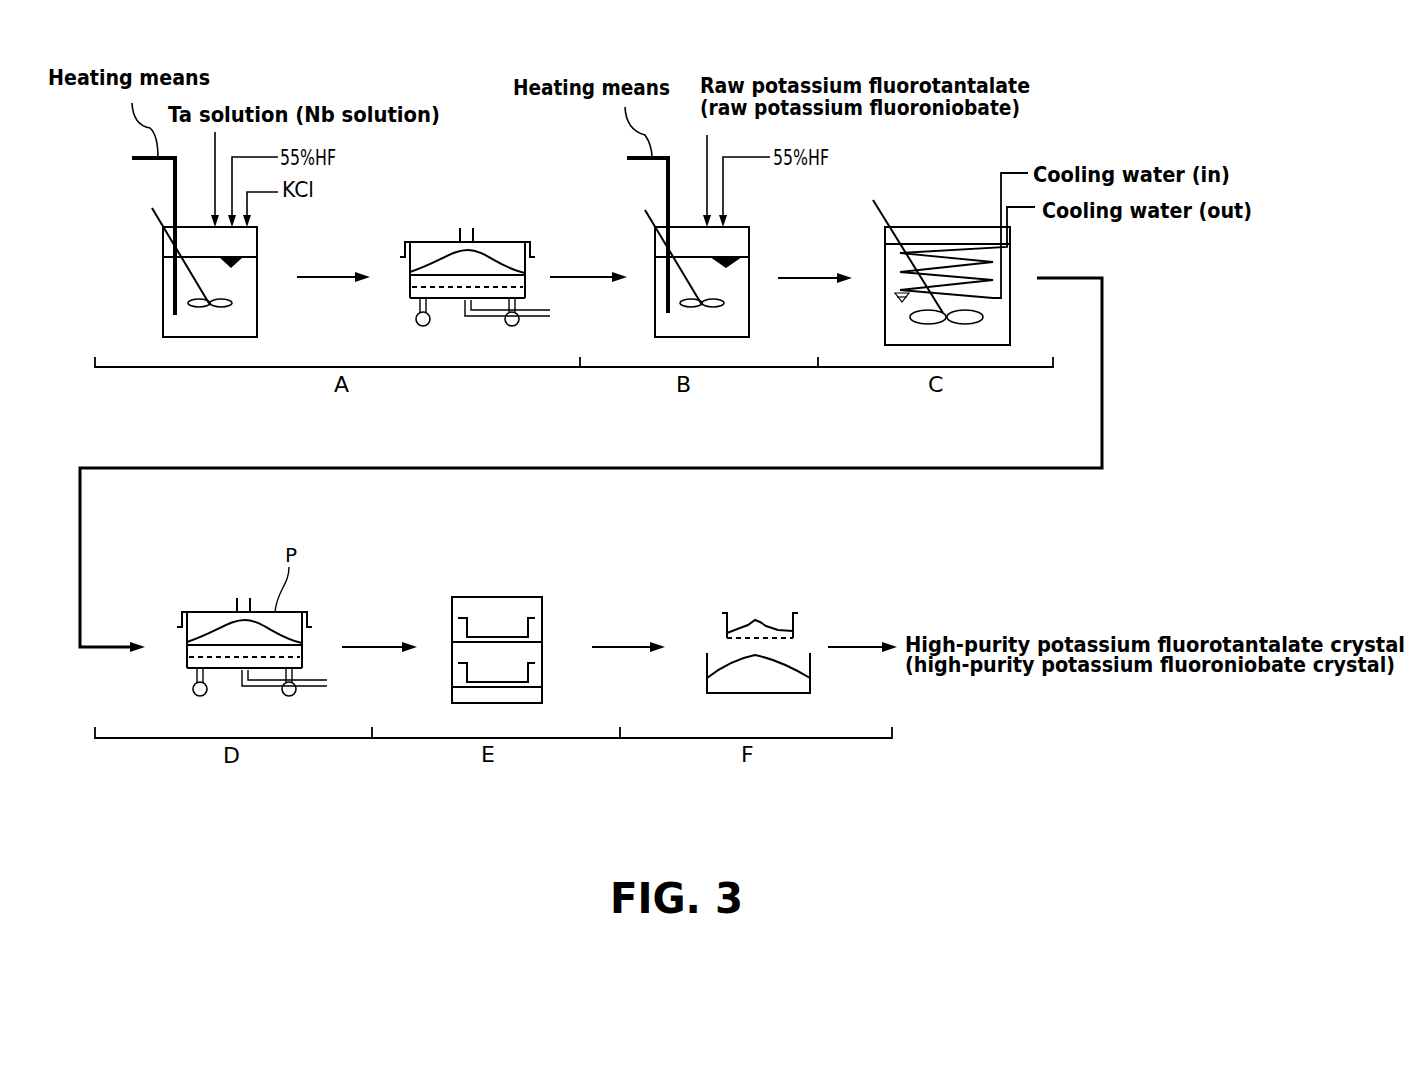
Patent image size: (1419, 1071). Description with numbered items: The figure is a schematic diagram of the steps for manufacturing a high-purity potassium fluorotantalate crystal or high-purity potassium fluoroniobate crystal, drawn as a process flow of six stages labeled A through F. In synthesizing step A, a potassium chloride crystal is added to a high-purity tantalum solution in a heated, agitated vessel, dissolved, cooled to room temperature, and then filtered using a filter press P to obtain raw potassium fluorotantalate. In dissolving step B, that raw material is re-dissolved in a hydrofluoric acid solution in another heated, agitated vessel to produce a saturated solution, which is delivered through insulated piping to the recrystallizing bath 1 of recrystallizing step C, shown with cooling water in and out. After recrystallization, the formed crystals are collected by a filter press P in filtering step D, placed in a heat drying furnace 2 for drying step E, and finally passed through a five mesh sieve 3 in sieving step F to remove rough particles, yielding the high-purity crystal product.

The recrystallizing bath 1 is at (937, 218).
The heat drying furnace 2 is at (493, 597).
The 5 mesh sieve 3 is at (797, 613).
The filter press P is at (498, 242).